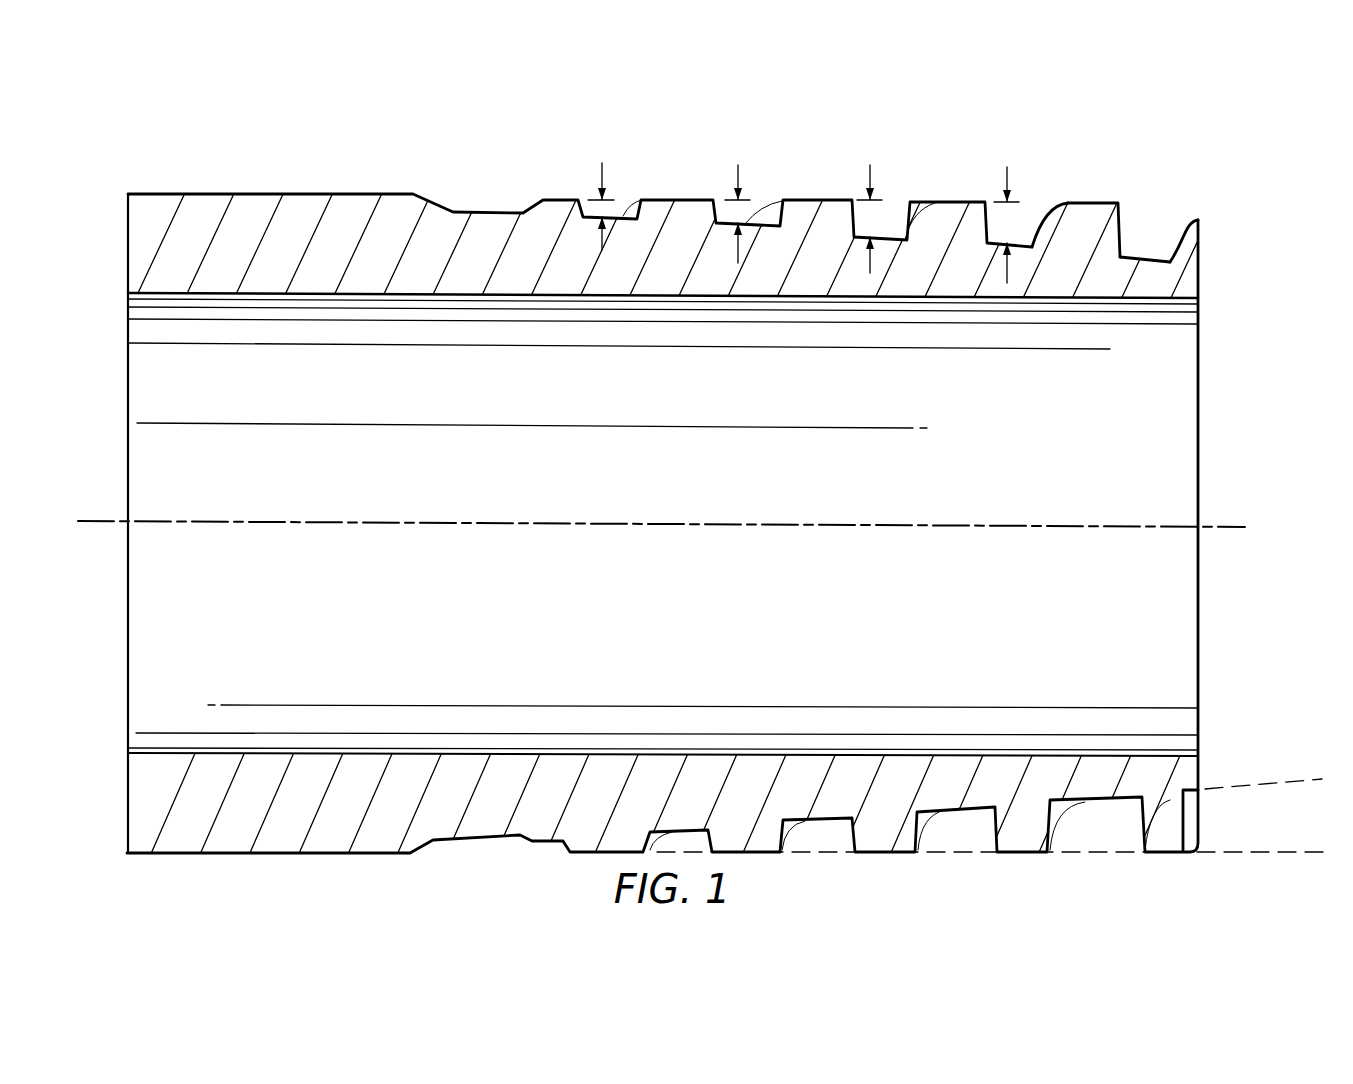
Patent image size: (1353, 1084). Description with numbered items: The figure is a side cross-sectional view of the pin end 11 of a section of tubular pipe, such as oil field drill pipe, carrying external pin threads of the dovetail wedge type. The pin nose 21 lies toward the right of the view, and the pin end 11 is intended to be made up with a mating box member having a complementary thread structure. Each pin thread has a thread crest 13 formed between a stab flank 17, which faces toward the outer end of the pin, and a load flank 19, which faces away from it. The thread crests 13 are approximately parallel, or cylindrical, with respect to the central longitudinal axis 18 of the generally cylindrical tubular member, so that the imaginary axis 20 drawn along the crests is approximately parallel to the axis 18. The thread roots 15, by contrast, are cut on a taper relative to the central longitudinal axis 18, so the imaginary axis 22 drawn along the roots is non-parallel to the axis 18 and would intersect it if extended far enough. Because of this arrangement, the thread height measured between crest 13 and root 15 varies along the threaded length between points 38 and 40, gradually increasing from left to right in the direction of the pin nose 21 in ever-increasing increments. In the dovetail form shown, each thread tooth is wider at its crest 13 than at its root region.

The pin end 11 is at (528, 126).
The point 38 is at (480, 212).
The load flank 19 is at (1068, 226).
The thread crest 13 is at (1094, 203).
The stab flank 17 is at (1127, 222).
The thread root 15 is at (1148, 260).
The point 40 is at (1200, 257).
The pin nose 21 is at (1200, 285).
The central longitudinal axis 18 is at (958, 527).
The imaginary axis 22 is at (1292, 781).
The imaginary axis 20 is at (1273, 855).